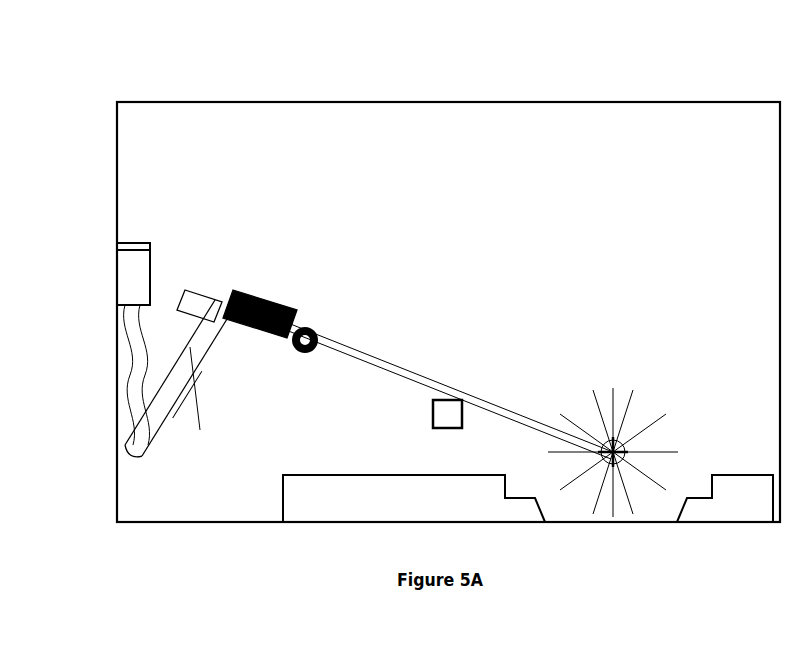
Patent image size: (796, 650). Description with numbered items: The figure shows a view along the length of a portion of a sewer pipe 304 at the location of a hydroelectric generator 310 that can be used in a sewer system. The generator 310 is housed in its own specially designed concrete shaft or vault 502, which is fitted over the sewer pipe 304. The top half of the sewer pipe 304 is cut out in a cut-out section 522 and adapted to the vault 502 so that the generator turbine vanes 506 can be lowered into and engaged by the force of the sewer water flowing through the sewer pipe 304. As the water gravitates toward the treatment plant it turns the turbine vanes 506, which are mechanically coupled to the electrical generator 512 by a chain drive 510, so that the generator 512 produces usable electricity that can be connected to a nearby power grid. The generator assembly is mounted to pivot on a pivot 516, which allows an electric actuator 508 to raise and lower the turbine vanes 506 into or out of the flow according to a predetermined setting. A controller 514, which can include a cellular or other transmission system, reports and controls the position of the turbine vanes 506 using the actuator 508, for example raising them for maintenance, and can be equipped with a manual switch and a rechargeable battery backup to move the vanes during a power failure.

The generator 310 is at (143, 98).
The vault 502 is at (248, 527).
The controller 514 is at (153, 273).
The electric actuator 508 is at (195, 372).
The generator 512 is at (283, 300).
The chain drive 510 is at (433, 372).
The pivot 516 is at (433, 417).
The turbine vanes 506 is at (608, 440).
The cut-out section 522 is at (676, 486).
The sewer pipe 304 is at (414, 498).